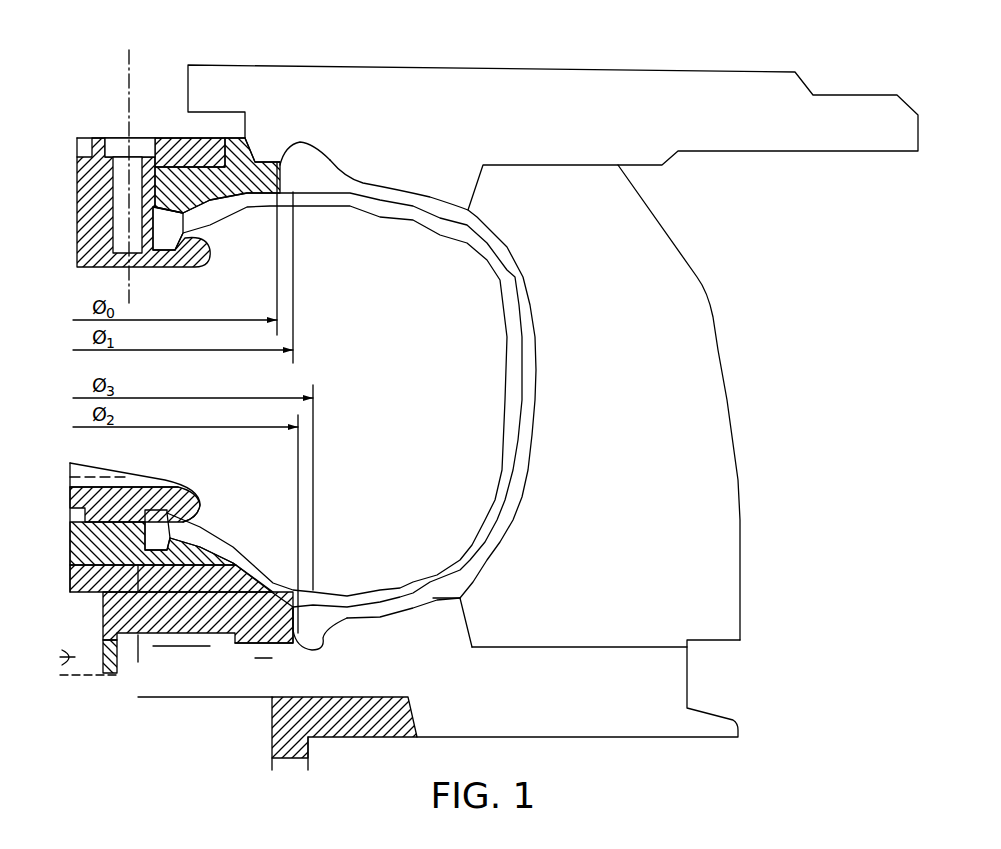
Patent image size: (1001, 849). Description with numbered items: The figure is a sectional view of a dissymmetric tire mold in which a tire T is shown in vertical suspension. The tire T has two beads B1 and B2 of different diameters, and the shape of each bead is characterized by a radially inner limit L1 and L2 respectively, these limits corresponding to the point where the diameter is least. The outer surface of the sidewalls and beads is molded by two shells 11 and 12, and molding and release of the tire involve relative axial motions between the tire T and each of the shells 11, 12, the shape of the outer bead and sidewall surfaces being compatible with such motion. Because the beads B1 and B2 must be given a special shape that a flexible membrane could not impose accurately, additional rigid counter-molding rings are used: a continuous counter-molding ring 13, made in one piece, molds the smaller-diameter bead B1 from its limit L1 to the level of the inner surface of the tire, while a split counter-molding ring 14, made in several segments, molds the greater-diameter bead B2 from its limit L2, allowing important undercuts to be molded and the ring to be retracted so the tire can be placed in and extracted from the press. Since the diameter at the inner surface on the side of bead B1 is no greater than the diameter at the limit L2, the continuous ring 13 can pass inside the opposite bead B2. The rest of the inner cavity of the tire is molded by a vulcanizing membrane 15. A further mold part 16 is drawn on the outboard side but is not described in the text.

The shell 11 is at (448, 117).
The shell 12 is at (487, 685).
The continuous counter-molding ring 13 is at (272, 160).
The split counter-molding ring 14 is at (188, 623).
The vulcanizing membrane 15 is at (507, 270).
The rim well / side wall of rim 16 is at (638, 395).
The tire T is at (490, 233).
The bead B1 is at (318, 163).
The bead B2 is at (325, 643).
The radially inner limit L1 is at (270, 160).
The radially inner limit L2 is at (290, 632).